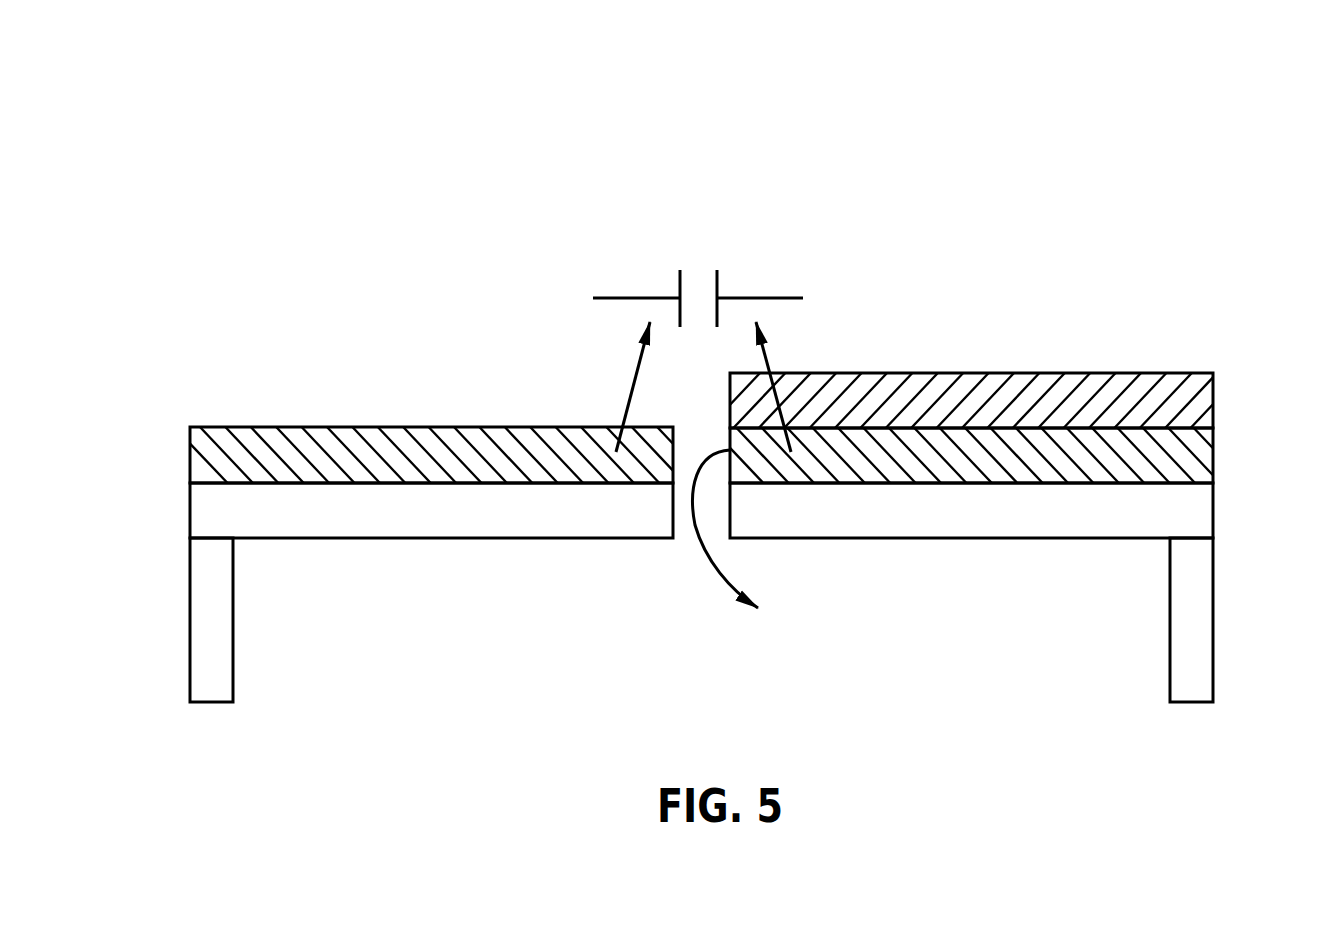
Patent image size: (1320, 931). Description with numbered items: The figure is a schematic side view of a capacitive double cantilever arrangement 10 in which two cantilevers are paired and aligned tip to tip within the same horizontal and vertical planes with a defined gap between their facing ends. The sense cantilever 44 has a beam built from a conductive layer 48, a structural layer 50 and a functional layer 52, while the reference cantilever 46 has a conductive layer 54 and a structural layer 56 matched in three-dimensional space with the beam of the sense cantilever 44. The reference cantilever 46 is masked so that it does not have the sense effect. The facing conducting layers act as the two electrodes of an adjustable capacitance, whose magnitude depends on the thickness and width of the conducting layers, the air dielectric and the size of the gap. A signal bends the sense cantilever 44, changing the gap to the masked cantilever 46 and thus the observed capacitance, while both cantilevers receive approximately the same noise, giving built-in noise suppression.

The sensor system 10 is at (120, 138).
The sense cantilever 44 is at (1018, 327).
The reference cantilever 46 is at (358, 353).
The conductive layer 48 is at (1213, 510).
The structural layer 50 is at (1213, 452).
The functional layer 52 is at (1213, 385).
The conductive layer 54 is at (190, 505).
The structural layer 56 is at (190, 443).